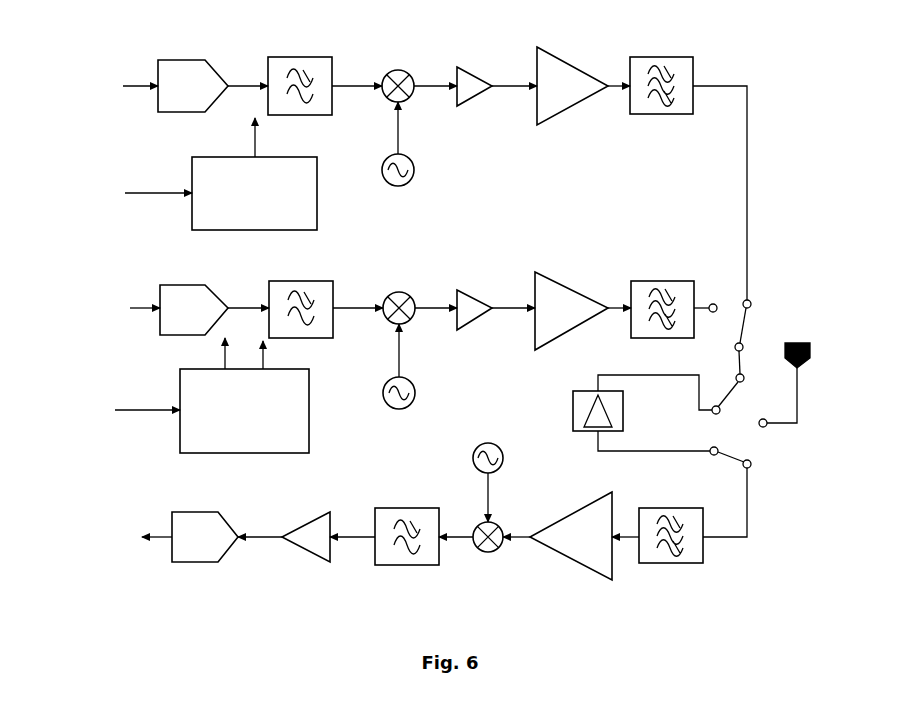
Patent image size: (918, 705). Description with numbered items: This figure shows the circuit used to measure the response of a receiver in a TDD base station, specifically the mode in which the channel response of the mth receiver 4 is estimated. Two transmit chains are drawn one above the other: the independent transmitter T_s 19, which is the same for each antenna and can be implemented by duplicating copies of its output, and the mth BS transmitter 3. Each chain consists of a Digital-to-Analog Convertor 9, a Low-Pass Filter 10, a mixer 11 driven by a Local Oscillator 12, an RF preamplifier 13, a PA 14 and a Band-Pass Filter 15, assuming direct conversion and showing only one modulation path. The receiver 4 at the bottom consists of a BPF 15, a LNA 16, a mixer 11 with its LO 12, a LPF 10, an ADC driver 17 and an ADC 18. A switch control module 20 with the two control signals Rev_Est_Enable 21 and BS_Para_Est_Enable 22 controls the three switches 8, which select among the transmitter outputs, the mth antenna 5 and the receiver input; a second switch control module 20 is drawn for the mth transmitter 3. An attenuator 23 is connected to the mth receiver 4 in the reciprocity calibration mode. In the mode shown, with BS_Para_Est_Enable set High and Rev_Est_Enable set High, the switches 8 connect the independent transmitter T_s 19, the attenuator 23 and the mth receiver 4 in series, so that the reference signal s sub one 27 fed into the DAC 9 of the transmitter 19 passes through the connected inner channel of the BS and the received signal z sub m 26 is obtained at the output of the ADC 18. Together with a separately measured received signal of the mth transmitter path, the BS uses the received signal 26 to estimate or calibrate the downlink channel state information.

The independent transmitter T_s 19 is at (144, 32).
The reference signal s_1 27 is at (137, 82).
The Digital-to-Analog Convertor 9 is at (193, 197).
The Low-Pass Filter 10 is at (353, 313).
The mixer 11 is at (443, 311).
The Local Oscillator 12 is at (443, 312).
The RF preamplifier 13 is at (489, 166).
The PA 14 is at (571, 198).
The Band-Pass Filter 15 is at (666, 313).
The switch control module 20 is at (248, 285).
The Rev_Est_Enable control signal 21 is at (109, 180).
The mth BS transmitter 3 is at (144, 271).
The BS_Para_Est_Enable control signal 22 is at (105, 395).
The switch 8 is at (737, 407).
The attenuator 23 is at (597, 405).
The mth antenna 5 is at (807, 372).
The LNA 16 is at (571, 536).
The ADC driver 17 is at (297, 570).
The ADC 18 is at (205, 537).
The received signal z_m 26 is at (149, 535).
The mth BS receiver 4 is at (155, 592).